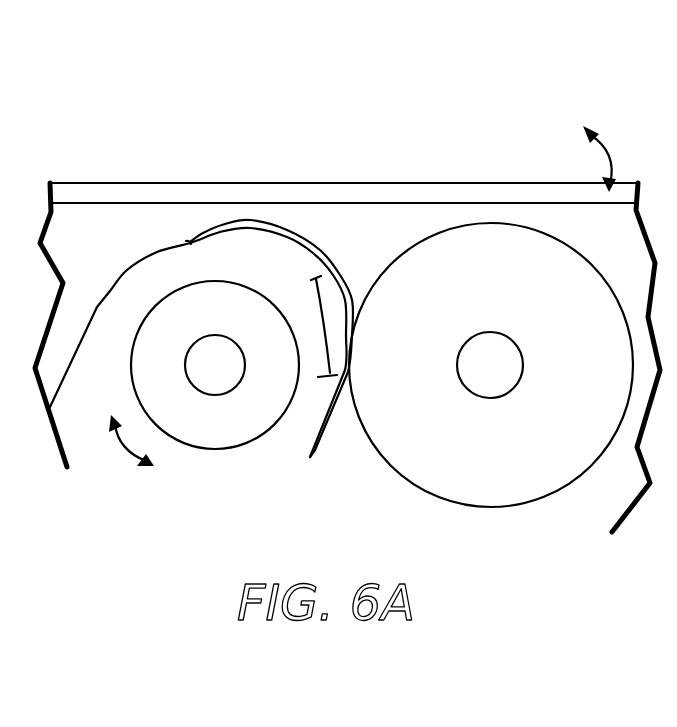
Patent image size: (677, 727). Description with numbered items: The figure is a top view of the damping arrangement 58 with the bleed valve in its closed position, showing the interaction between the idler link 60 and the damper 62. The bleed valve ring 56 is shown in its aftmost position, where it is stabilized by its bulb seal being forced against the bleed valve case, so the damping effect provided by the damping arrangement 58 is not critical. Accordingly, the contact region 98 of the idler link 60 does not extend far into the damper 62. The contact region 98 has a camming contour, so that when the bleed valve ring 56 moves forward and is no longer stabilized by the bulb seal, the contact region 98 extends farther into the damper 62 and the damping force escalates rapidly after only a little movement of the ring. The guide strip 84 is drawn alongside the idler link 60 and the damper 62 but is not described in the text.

The bleed valve ring 56 is at (186, 192).
The damping arrangement 58 is at (449, 112).
The idler link 60 is at (123, 262).
The damper 62 is at (401, 234).
The flexible guide strip 84 is at (308, 245).
The contact region 98 is at (322, 310).